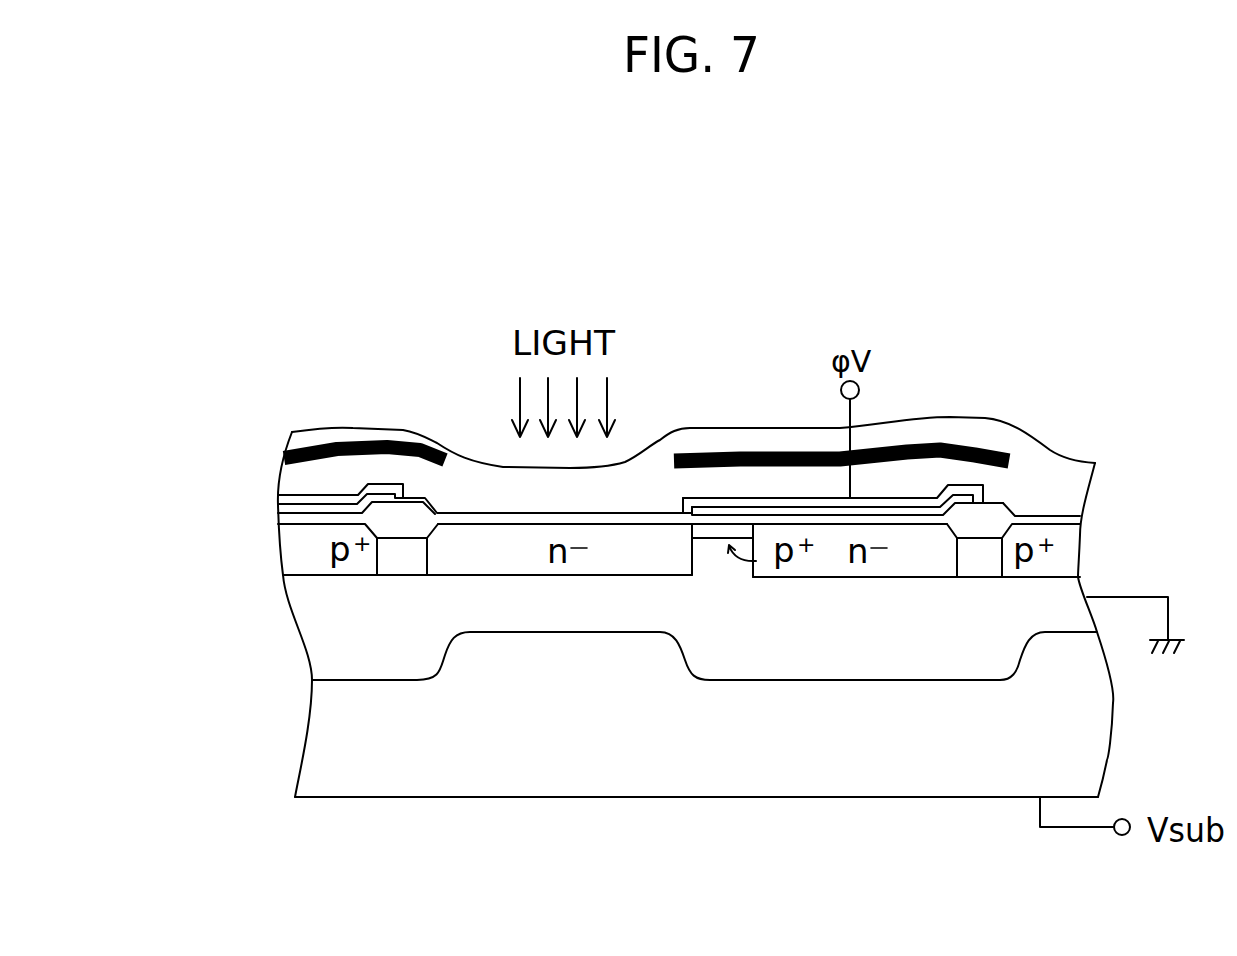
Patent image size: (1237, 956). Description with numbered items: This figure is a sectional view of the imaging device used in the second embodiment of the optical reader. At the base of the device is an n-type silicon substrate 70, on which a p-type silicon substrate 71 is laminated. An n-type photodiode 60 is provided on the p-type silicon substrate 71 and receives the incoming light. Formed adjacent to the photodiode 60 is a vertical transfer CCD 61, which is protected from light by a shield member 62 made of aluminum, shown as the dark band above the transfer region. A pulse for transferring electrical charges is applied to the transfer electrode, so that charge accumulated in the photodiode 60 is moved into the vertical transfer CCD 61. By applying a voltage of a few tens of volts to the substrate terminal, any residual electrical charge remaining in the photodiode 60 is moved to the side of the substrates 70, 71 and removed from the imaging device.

The photodiode 60 is at (467, 560).
The vertical transfer CCD 61 is at (907, 552).
The shield member 62 is at (957, 447).
The n-type silicon substrate 70 is at (338, 742).
The p-type silicon substrate 71 is at (328, 638).